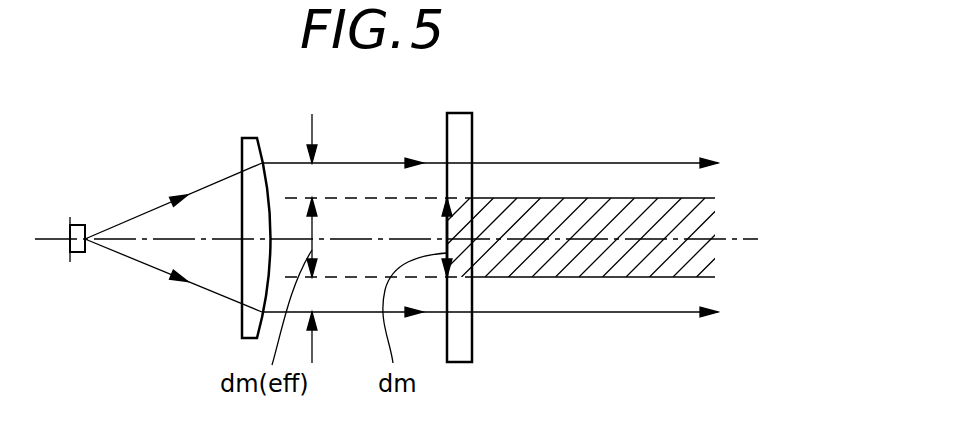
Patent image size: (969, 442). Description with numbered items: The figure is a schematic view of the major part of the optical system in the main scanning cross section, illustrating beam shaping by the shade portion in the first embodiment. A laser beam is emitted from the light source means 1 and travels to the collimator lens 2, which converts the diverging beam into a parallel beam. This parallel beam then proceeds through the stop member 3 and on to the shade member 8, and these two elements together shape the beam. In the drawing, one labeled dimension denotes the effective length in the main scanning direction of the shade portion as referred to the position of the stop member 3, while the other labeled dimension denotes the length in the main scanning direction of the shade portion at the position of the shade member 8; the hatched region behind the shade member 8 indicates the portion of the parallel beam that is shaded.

The light source means 1 is at (80, 225).
The collimator lens 2 is at (251, 138).
The stop member 3 is at (312, 114).
The shade member 8 is at (473, 121).